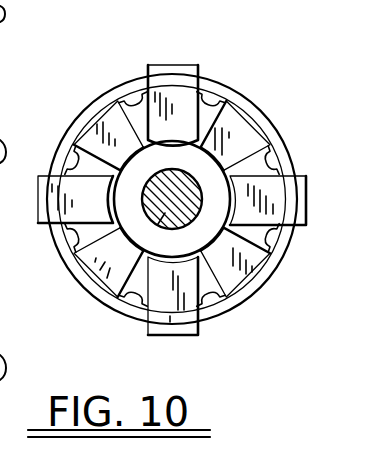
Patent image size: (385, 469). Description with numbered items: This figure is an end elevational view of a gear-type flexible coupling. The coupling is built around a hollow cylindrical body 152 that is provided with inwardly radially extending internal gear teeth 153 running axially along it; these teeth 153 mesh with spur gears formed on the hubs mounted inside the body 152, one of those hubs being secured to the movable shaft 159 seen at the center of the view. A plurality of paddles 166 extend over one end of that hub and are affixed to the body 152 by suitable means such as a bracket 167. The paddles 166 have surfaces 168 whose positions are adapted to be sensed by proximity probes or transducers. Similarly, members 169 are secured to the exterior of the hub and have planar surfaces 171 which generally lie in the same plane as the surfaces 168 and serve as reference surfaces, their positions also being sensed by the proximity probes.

The hollow cylindrical body 152 is at (263, 277).
The internal gear teeth 153 is at (76, 237).
The movable shaft 159 is at (162, 218).
The paddles 166 is at (201, 74).
The bracket 167 is at (212, 301).
The surfaces 168 is at (162, 77).
The members 169 is at (131, 83).
The planar surfaces 171 is at (95, 132).